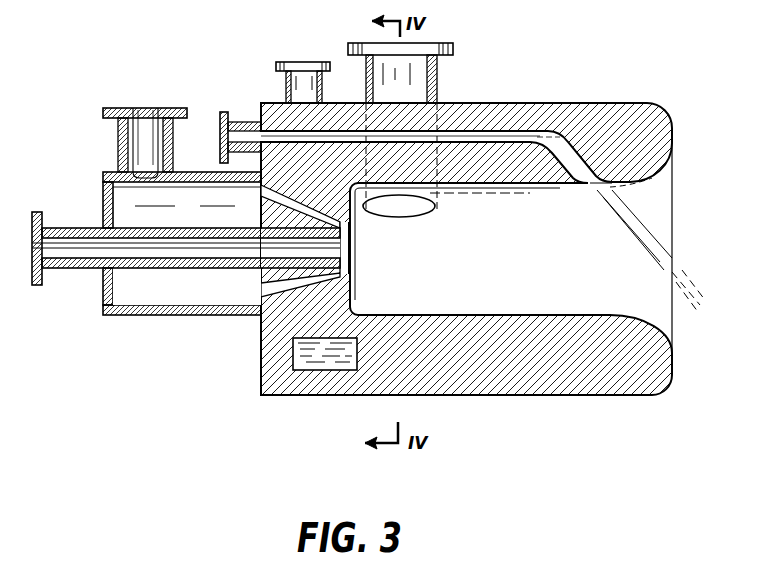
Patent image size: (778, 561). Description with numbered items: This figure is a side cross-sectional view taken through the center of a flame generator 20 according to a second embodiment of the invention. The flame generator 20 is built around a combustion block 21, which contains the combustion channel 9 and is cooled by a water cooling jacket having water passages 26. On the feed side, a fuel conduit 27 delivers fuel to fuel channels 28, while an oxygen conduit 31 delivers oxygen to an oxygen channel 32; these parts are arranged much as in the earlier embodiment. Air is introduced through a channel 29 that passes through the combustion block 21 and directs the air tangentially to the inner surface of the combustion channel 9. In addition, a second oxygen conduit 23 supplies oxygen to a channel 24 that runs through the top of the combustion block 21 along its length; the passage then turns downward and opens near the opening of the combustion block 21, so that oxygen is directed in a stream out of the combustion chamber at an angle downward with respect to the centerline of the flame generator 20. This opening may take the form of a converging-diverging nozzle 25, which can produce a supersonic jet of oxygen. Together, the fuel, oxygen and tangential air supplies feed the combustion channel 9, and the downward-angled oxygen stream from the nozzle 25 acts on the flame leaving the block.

The combustion channel 9 is at (500, 277).
The flame generator 20 is at (599, 408).
The combustion block 21 is at (508, 388).
The second oxygen conduit 23 is at (243, 135).
The channel 24 is at (557, 130).
The converging-diverging nozzle 25 is at (588, 180).
The water passages 26 is at (323, 363).
The fuel conduit 27 is at (161, 227).
The fuel channels 28 is at (293, 293).
The channel 29 is at (385, 88).
The oxygen conduit 31 is at (135, 252).
The oxygen channel 32 is at (262, 280).